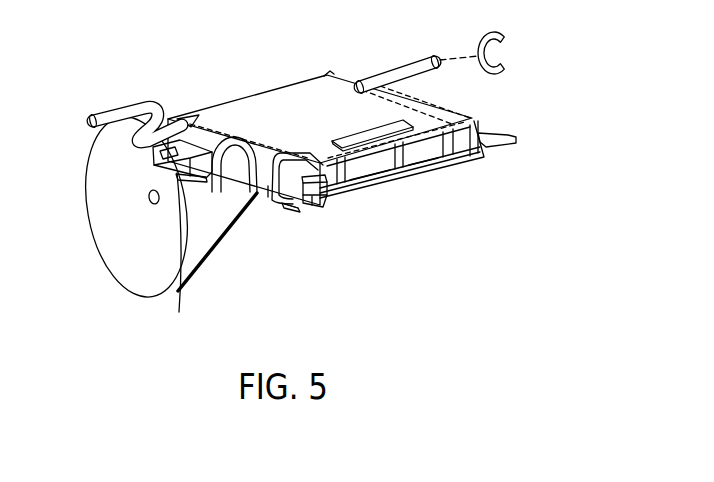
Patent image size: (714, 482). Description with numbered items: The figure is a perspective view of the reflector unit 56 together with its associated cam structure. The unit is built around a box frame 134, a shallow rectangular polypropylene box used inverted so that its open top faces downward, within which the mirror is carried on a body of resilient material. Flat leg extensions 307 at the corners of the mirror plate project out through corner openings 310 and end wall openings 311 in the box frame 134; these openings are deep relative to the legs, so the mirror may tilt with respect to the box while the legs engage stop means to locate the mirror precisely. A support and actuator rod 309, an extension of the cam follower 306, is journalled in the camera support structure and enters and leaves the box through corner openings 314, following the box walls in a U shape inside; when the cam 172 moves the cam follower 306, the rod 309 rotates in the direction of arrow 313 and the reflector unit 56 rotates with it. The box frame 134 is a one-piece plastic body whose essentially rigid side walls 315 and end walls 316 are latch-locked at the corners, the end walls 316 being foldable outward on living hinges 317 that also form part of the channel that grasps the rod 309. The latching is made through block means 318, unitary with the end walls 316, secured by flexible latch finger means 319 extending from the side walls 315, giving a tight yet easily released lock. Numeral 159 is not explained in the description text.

The reflector unit 56 is at (307, 72).
The box frame 134 is at (462, 145).
The locating lug 159 is at (300, 211).
The cam 172 is at (97, 254).
The cam follower 306 is at (90, 122).
The leg extensions 307 is at (513, 142).
The support and actuator rod 309 is at (381, 88).
The corner openings 310 is at (475, 121).
The end wall openings 311 is at (207, 184).
The arrow 313 is at (510, 36).
The corner openings 314 is at (178, 118).
The side walls 315 is at (386, 160).
The end walls 316 is at (262, 182).
The living hinges 317 is at (280, 154).
The block means 318 is at (327, 197).
The latch finger means 319 is at (316, 203).